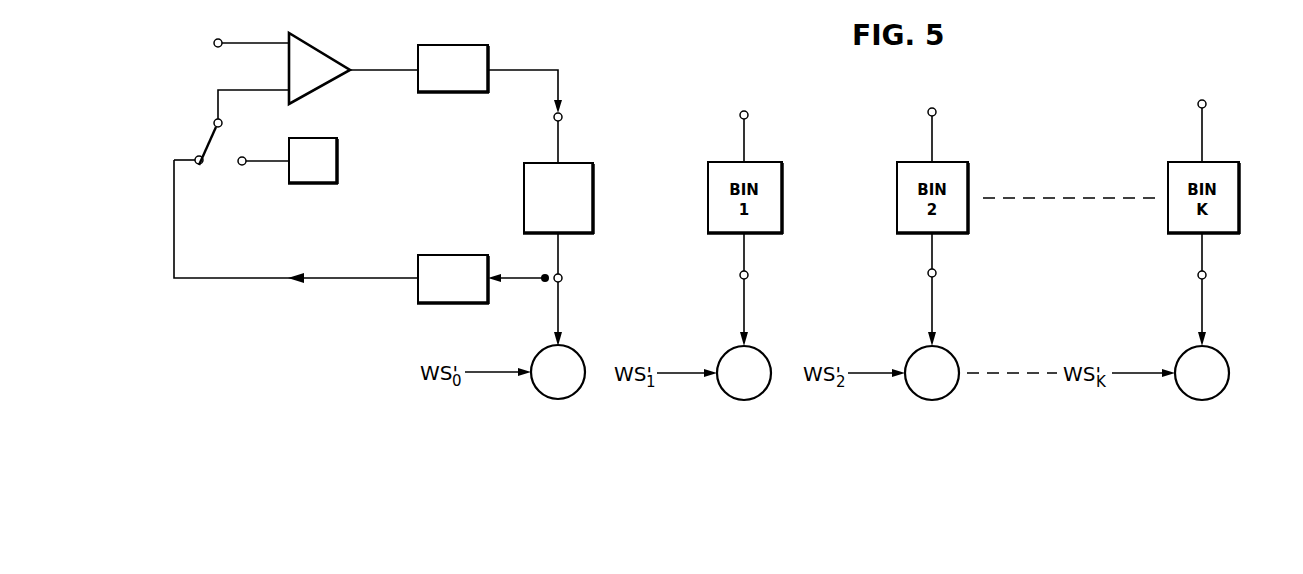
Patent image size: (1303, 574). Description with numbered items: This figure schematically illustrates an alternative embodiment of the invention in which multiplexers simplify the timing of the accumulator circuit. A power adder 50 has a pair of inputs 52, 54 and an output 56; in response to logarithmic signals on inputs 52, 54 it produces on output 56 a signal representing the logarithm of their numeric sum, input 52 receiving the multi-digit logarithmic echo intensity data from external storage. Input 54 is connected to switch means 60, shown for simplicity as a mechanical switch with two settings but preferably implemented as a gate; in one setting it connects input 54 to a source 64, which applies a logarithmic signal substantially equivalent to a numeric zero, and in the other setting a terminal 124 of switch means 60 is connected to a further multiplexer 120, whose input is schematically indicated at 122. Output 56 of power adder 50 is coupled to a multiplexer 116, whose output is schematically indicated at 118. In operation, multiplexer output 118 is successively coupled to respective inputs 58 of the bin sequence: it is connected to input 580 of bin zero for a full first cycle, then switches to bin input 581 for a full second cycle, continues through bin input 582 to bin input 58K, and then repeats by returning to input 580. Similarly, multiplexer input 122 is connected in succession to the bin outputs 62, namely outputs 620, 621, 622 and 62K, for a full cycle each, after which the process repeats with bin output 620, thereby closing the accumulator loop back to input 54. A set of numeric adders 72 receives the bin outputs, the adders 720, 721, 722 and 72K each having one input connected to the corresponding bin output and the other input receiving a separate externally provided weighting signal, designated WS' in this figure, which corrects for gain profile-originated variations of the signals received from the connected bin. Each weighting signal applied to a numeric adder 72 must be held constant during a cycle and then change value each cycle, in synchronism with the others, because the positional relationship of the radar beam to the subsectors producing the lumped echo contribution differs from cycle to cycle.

The power adder 50 is at (318, 56).
The input 52 is at (220, 40).
The input 54 is at (257, 89).
The output 56 is at (378, 69).
The bin inputs 58 is at (906, 121).
The bin 0 input 580 is at (562, 117).
The bin 1 input 581 is at (748, 114).
The bin 2 input 582 is at (936, 111).
The bin K input 58K is at (1206, 103).
The switch means 60 is at (208, 143).
The bin outputs 62 is at (880, 289).
The bin 0 output 620 is at (562, 278).
The bin 1 output 621 is at (748, 274).
The bin 2 output 622 is at (936, 272).
The bin K output 62K is at (1198, 276).
The source 64 is at (337, 157).
The numeric adders 72 is at (891, 398).
The numeric adder 720 is at (562, 383).
The numeric adder 721 is at (745, 390).
The numeric adder 722 is at (935, 393).
The numeric adder 72K is at (1204, 392).
The multiplexer 116 is at (460, 50).
The multiplexer output 118 is at (559, 86).
The further multiplexer 120 is at (447, 256).
The multiplexer input 122 is at (541, 280).
The terminal 124 is at (196, 168).